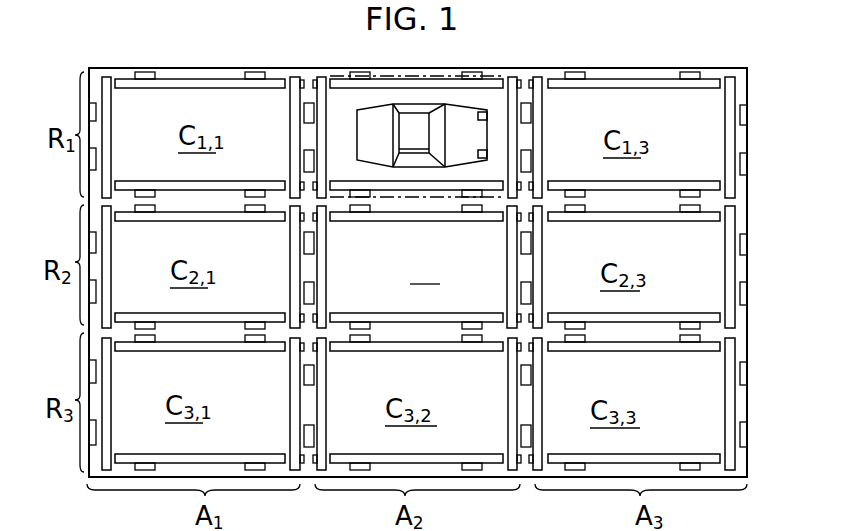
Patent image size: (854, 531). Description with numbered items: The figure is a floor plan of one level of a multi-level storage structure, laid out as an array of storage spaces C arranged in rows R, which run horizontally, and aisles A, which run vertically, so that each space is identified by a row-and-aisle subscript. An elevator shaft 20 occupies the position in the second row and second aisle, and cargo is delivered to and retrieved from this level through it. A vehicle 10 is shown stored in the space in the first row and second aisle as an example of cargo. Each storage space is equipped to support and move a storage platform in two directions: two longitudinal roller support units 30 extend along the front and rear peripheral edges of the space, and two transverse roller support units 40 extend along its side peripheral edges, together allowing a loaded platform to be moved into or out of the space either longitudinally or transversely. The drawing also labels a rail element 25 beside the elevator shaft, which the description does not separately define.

The vehicle 10 is at (377, 118).
The elevator shaft 20 is at (426, 270).
The vertical guide rail 25 is at (483, 256).
The longitudinal roller support unit 30 is at (192, 80).
The transverse roller support unit 40 is at (107, 76).